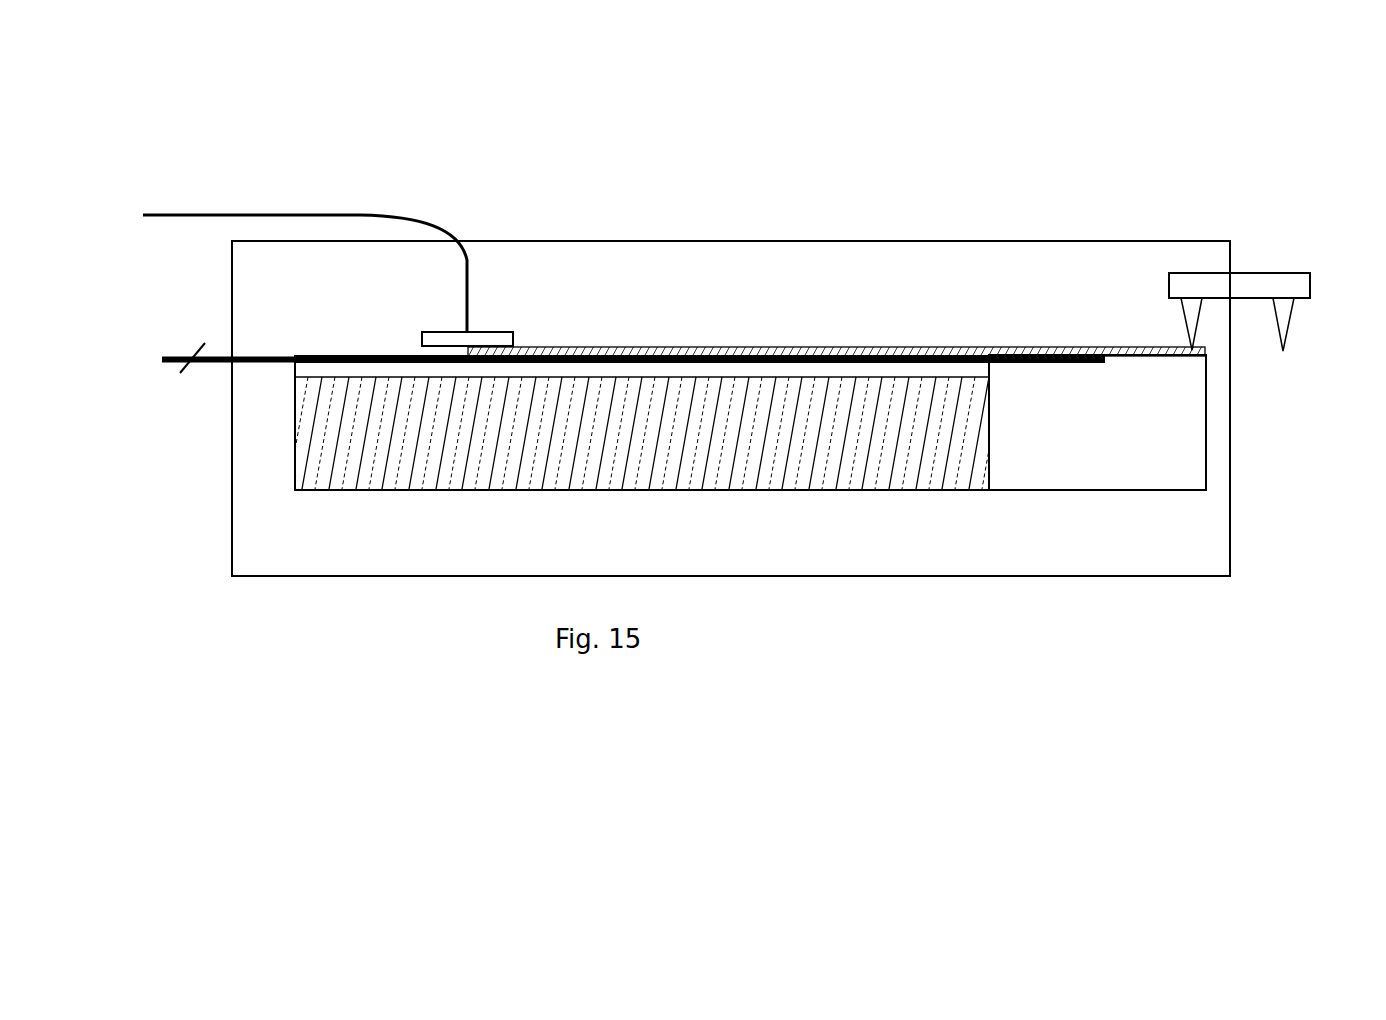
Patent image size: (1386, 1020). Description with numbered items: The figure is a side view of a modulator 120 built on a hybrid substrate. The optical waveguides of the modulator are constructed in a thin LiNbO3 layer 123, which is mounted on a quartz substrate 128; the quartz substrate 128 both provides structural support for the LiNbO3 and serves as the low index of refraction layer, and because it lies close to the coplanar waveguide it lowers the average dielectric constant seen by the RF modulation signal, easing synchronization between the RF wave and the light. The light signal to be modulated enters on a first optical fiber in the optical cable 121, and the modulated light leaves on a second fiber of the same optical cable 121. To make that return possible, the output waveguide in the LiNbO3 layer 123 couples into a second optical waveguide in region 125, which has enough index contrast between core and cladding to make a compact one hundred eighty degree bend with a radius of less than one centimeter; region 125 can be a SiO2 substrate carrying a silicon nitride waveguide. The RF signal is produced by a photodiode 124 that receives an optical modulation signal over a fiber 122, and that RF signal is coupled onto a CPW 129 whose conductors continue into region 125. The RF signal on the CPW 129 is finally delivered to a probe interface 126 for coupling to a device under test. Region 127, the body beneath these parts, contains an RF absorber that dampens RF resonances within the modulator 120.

The modulator 120 is at (232, 545).
The optical cable 121 is at (210, 365).
The fiber 122 is at (395, 213).
The thin LiNbO3 layer 123 is at (975, 369).
The photodiode 124 is at (490, 330).
The region 125 is at (1099, 442).
The probe interface 126 is at (1262, 277).
The region 127 is at (722, 557).
The quartz substrate 128 is at (953, 475).
The CPW 129 is at (787, 348).